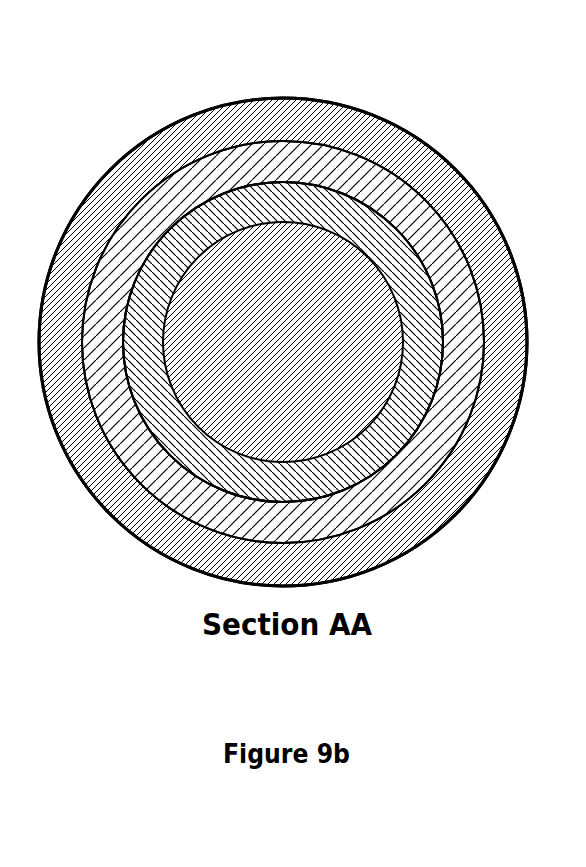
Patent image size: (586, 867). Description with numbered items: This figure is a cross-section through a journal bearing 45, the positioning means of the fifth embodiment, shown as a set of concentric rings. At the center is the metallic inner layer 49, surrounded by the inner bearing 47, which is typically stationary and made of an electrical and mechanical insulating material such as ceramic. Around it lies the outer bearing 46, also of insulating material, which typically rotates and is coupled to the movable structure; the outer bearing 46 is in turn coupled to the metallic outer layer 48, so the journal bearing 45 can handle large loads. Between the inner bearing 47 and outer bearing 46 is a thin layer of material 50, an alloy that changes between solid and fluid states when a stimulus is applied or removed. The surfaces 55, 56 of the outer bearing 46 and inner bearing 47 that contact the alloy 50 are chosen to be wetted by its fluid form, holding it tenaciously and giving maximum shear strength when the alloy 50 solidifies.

The journal bearing 45 is at (301, 53).
The outer bearing 46 is at (448, 252).
The inner bearing 47 is at (423, 328).
The outer layer 48 is at (466, 186).
The inner layer 49 is at (350, 385).
The thin layer of material 50 is at (440, 377).
The wetted surface of outer bearing 55 is at (350, 193).
The wetted surface of inner bearing 56 is at (350, 193).